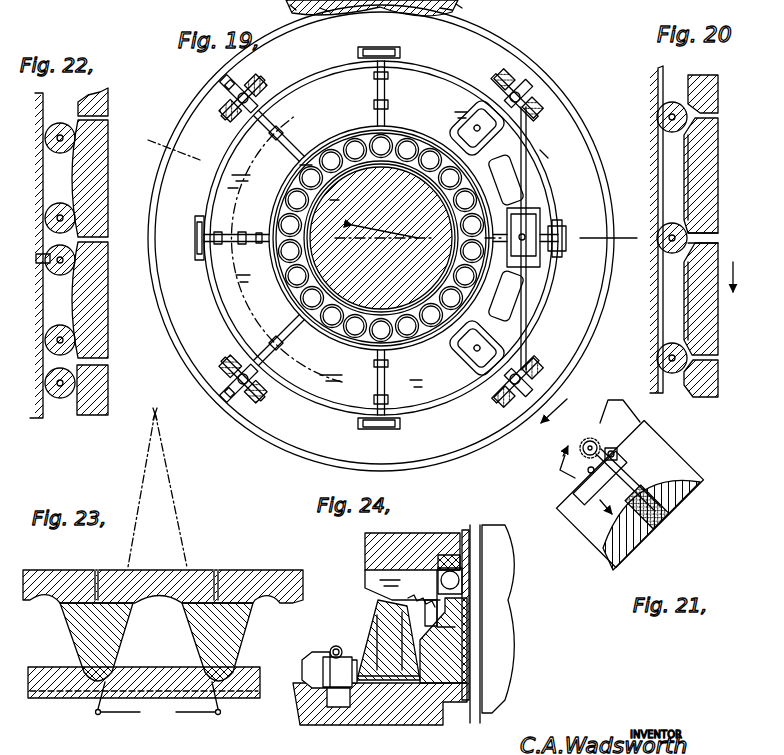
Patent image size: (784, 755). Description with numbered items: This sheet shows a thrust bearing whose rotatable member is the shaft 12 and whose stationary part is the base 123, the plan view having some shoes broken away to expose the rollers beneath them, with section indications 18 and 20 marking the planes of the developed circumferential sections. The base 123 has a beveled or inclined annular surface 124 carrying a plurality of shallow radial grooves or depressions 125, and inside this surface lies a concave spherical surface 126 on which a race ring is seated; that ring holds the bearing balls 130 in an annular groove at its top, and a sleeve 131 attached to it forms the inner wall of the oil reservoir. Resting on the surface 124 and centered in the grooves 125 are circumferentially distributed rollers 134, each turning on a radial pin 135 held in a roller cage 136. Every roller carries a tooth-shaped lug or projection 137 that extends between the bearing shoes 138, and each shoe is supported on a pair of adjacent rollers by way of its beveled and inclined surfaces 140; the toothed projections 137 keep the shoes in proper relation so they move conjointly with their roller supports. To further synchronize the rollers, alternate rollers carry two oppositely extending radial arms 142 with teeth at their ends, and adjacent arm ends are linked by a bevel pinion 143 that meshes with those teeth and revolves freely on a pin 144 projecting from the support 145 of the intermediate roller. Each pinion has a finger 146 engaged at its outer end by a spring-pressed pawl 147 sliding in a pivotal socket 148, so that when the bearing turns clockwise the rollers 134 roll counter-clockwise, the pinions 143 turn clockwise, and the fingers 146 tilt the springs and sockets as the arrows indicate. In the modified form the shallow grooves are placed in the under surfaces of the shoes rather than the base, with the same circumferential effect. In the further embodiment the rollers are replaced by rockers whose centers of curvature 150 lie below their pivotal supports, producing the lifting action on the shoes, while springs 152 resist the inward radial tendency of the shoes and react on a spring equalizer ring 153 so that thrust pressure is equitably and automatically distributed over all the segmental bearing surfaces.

In FIG. 19, the shaft 12 is at (398, 296).
In FIG. 19, the section line 18- 18 is at (152, 118).
In FIG. 19, the section line 20 is at (283, 98).
In FIG. 19, the base 123 is at (556, 2).
In FIG. 23, the base 123 is at (246, 668).
In FIG. 24, the base 123 is at (380, 708).
In FIG. 19, the beveled annular surface 124 is at (288, 8).
In FIG. 20, the radial grooves 125 is at (660, 108).
In FIG. 19, the concave spherical surface 126 is at (320, 10).
In FIG. 19, the bearing balls 130 is at (298, 278).
In FIG. 19, the sleeve 131 is at (357, 322).
In FIG. 19, the rollers 134 is at (532, 145).
In FIG. 20, the rollers 134 is at (657, 118).
In FIG. 22, the rollers 134 is at (48, 140).
In FIG. 19, the radial pins 135 is at (455, 10).
In FIG. 19, the roller cage 136 is at (546, 170).
In FIG. 19, the toothed projection 137 is at (272, 140).
In FIG. 20, the toothed projection 137 is at (718, 95).
In FIG. 23, the toothed projection 137 is at (96, 600).
In FIG. 24, the toothed projection 137 is at (372, 597).
In FIG. 19, the bearing shoes 138 is at (437, 61).
In FIG. 20, the bearing shoes 138 is at (718, 165).
In FIG. 22, the bearing shoes 138 is at (100, 170).
In FIG. 23, the bearing shoes 138 is at (97, 600).
In FIG. 24, the bearing shoes 138 is at (372, 567).
In FIG. 20, the beveled inclined surfaces 140 is at (695, 241).
In FIG. 19, the radial arms 142 is at (490, 80).
In FIG. 21, the radial arms 142 is at (624, 424).
In FIG. 19, the bevel pinion 143 is at (230, 100).
In FIG. 21, the bevel pinion 143 is at (590, 438).
In FIG. 19, the pin 144 is at (523, 108).
In FIG. 21, the pin 144 is at (578, 453).
In FIG. 19, the support 145 is at (528, 120).
In FIG. 21, the support 145 is at (574, 490).
In FIG. 21, the finger 146 is at (642, 470).
In FIG. 21, the spring-pressed pawl 147 is at (660, 488).
In FIG. 21, the pivotal socket 148 is at (664, 504).
In FIG. 23, the centers of curvature 150 is at (158, 702).
In FIG. 24, the springs 152 is at (414, 596).
In FIG. 24, the spring equalizer ring 153 is at (440, 618).